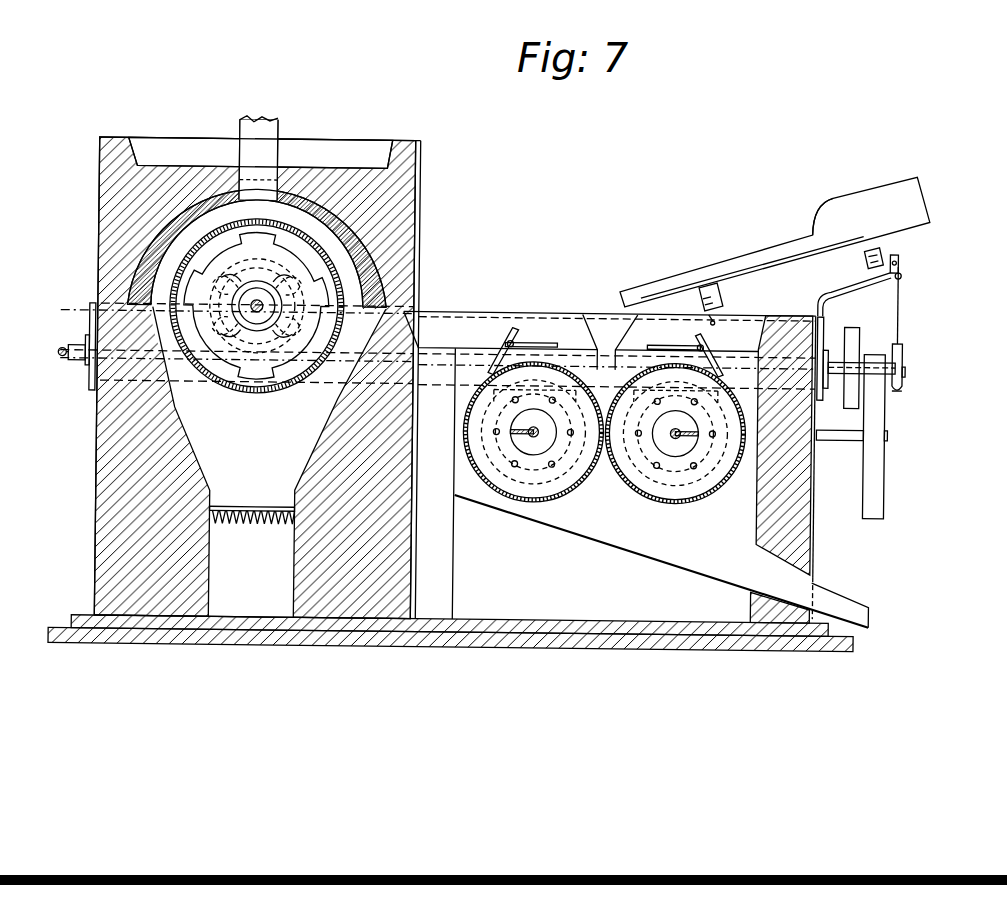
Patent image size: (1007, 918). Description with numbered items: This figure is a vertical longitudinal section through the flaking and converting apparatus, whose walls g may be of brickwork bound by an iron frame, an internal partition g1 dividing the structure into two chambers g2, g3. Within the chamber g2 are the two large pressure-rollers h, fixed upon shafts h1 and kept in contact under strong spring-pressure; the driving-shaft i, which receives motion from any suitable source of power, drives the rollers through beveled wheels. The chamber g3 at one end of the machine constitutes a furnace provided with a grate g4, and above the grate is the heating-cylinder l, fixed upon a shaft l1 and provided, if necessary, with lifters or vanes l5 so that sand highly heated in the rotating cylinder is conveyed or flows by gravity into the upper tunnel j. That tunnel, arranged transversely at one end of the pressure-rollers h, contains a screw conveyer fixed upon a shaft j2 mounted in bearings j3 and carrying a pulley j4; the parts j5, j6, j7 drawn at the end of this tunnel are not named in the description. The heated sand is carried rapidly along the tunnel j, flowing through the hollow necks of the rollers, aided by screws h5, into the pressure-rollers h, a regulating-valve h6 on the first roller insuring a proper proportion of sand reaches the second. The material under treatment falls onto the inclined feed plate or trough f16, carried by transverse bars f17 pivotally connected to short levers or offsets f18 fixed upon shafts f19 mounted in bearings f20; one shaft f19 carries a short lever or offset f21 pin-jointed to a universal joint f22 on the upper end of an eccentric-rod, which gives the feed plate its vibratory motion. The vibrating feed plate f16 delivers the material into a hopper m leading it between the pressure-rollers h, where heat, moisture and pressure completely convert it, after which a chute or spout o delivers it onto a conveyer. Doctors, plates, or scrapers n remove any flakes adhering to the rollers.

The walls of the apparatus g is at (403, 182).
The internal partition g1 is at (412, 313).
The chamber g2 is at (433, 378).
The chamber g3 is at (179, 247).
The grate g4 is at (211, 512).
The heating-cylinder l is at (212, 231).
The shaft l1 is at (262, 306).
The lifters or vanes l5 is at (361, 234).
The tunnel j is at (93, 322).
The shaft j2 is at (62, 366).
The bearings j3 is at (80, 364).
The pulley j4 is at (818, 366).
The collar j5 is at (903, 374).
The collar end j6 is at (901, 384).
The pipe j7 is at (899, 309).
The pressure-rollers h is at (560, 407).
The shafts h1 is at (602, 350).
The screws h5 is at (534, 431).
The regulating-valve h6 is at (597, 400).
The hopper m is at (584, 312).
The doctors, plates, or scrapers n is at (512, 328).
The driving-shaft i is at (843, 438).
The chute or spout o is at (871, 611).
The feed tray f is at (892, 254).
The inclined feed plate or trough f16 is at (816, 220).
The transverse bars f17 is at (711, 290).
The short levers or offsets f18 is at (715, 293).
The shafts f19 is at (759, 291).
The bearings f20 is at (706, 285).
The short lever or offset f21 is at (894, 264).
The universal joint f22 is at (896, 274).